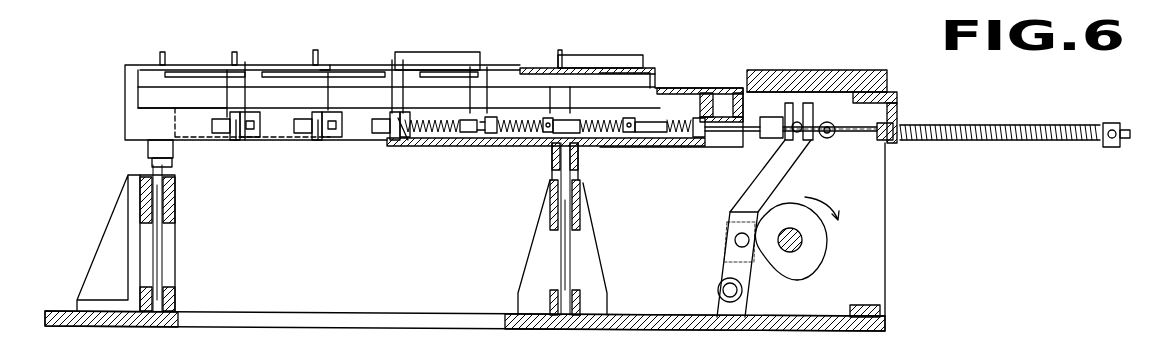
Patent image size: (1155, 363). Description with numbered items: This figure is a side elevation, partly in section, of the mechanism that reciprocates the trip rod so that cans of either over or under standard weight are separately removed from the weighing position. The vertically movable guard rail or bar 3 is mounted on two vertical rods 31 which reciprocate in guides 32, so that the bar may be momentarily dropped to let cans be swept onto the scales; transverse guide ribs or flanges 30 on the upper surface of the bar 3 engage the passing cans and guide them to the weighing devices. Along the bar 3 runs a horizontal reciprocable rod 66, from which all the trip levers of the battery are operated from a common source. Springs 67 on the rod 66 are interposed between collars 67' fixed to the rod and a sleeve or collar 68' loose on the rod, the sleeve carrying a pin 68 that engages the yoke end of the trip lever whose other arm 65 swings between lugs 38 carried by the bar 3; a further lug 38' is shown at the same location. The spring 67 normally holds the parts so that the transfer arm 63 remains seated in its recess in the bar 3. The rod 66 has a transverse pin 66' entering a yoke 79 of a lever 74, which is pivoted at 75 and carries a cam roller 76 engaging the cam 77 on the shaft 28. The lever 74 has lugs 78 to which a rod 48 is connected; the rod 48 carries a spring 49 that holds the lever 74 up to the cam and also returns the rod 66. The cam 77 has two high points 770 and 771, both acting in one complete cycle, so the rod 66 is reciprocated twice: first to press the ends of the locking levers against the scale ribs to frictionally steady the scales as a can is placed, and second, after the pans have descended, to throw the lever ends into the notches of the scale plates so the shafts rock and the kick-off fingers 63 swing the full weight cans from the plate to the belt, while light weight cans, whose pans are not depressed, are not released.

The bar 3 is at (510, 80).
The shaft 28 is at (802, 245).
The guide ribs 30 is at (478, 58).
The vertical rods 31 is at (168, 255).
The guides 32 is at (177, 203).
The lugs 38 is at (278, 141).
The clamp 38' is at (403, 142).
The rod 48 is at (893, 142).
The spring 49 is at (975, 140).
The transfer arm 63 is at (318, 72).
The bell crank lever arm 65 is at (297, 118).
The reciprocable rod 66 is at (791, 145).
The transverse pin 66' is at (815, 144).
The spring 67 is at (554, 99).
The collars 67' is at (588, 144).
The pin 68 is at (616, 147).
The sleeve 68' is at (583, 141).
The lever 74 is at (778, 168).
The pivot 75 is at (720, 292).
The cam roller 76 is at (733, 237).
The cam 77 is at (822, 238).
The lugs 78 is at (832, 138).
The yoke 79 is at (808, 112).
The high point 770 is at (800, 283).
The high point 771 is at (837, 202).